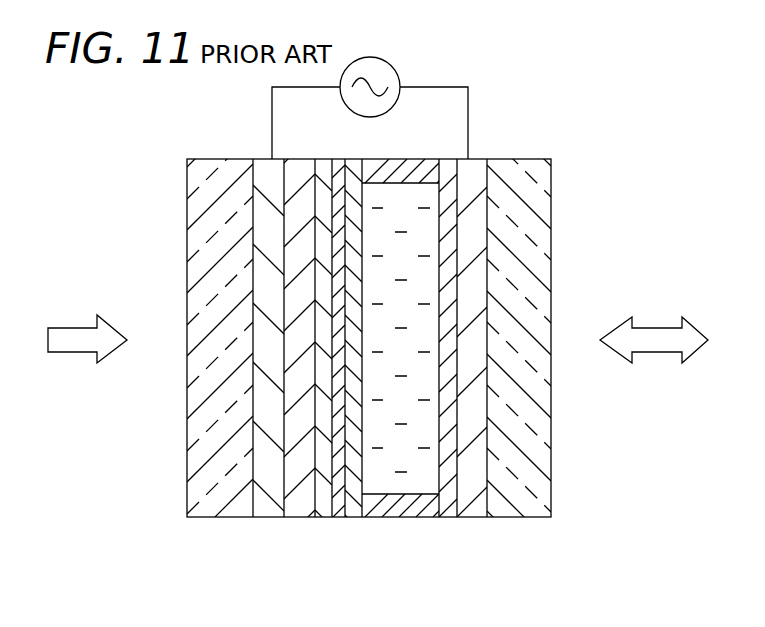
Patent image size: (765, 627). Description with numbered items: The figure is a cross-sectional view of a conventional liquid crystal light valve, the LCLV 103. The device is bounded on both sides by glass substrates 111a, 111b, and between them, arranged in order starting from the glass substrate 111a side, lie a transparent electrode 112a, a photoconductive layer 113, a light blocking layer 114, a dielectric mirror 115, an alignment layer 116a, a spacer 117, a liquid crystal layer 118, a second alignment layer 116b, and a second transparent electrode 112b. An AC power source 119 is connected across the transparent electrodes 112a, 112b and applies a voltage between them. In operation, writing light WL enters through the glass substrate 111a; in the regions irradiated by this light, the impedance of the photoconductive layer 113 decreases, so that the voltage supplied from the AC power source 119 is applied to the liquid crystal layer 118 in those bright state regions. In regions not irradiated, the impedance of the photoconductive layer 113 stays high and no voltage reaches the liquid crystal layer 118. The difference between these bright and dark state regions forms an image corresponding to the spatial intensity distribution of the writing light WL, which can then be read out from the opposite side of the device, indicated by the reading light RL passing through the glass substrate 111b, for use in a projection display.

The LCLV 103 is at (565, 70).
The glass substrate 111a is at (215, 158).
The glass substrate 111b is at (527, 158).
The transparent electrode 112a is at (265, 518).
The transparent electrode 112b is at (477, 158).
The photoconductive layer 113 is at (290, 518).
The light blocking layer 114 is at (325, 518).
The dielectric mirror 115 is at (336, 518).
The alignment layer 116a is at (353, 518).
The alignment layer 116b is at (449, 158).
The spacer 117 is at (403, 518).
The liquid crystal layer 118 is at (415, 478).
The AC power source 119 is at (397, 67).
The writing light WL is at (70, 352).
The read light direction RL is at (662, 352).